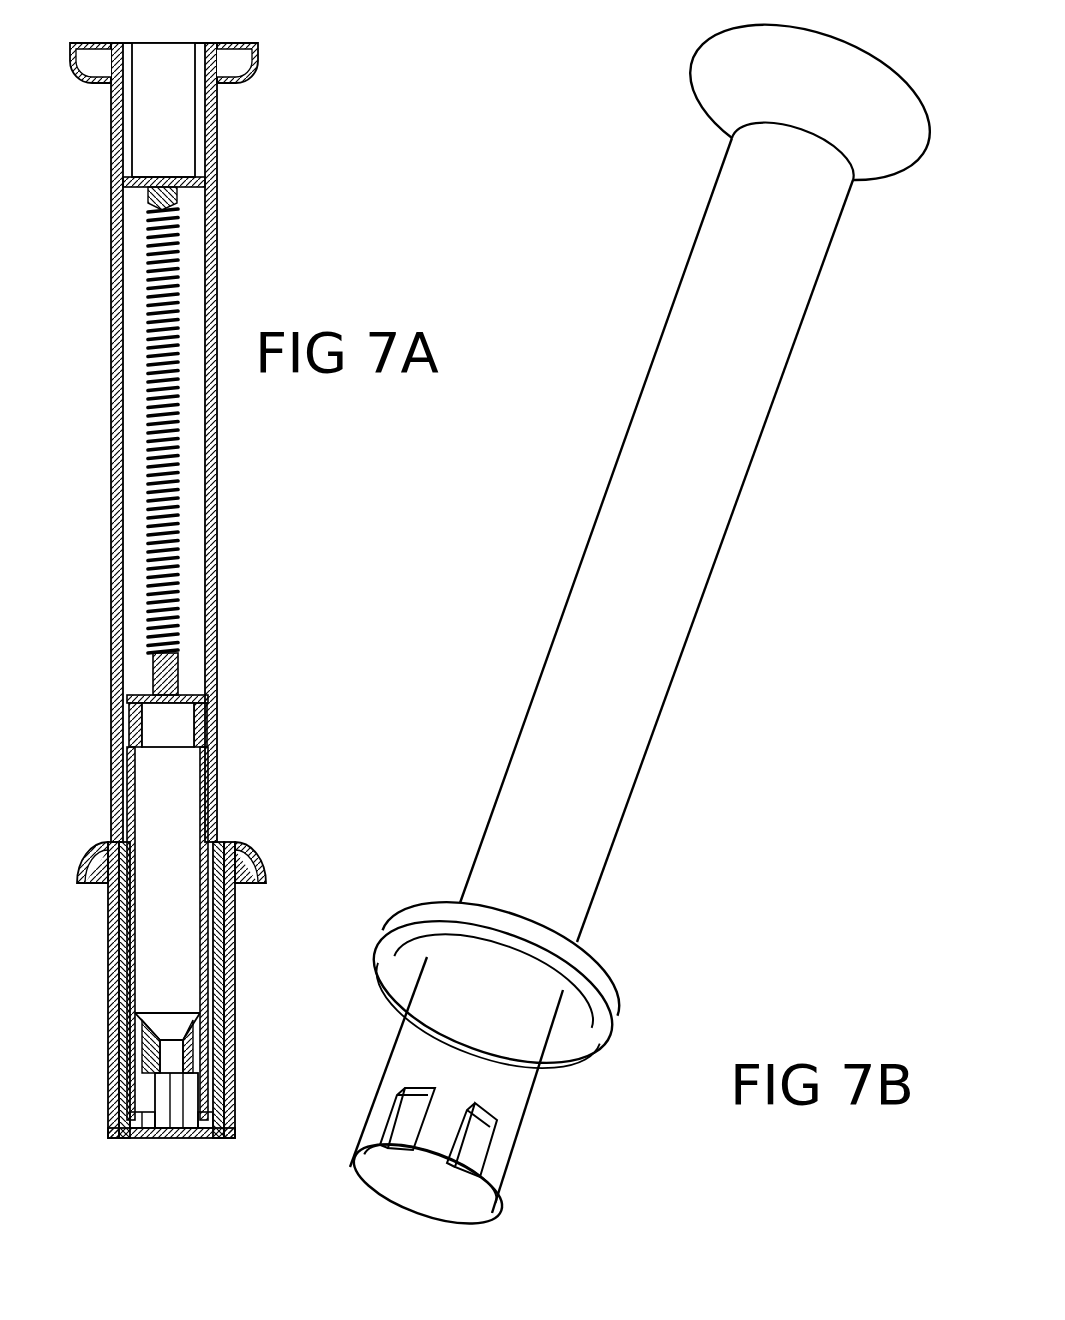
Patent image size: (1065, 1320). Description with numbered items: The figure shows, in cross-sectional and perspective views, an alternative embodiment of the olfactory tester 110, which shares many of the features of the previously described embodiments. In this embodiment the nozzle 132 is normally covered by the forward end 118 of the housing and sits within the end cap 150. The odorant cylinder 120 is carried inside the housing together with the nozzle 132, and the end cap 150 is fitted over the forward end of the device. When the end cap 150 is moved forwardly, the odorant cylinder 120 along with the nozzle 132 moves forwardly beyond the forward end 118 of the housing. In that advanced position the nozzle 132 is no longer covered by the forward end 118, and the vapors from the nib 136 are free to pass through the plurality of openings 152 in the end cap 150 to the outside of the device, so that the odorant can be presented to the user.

In FIG. 7A, the olfactory tester 110 is at (221, 590).
In FIG. 7B, the olfactory tester 110 is at (792, 735).
In FIG. 7A, the forward end of the housing 118 is at (108, 1040).
In FIG. 7A, the odorant cylinder 120 is at (218, 777).
In FIG. 7A, the nozzle 132 is at (110, 1108).
In FIG. 7A, the end cap 150 is at (235, 1105).
In FIG. 7B, the end cap 150 is at (527, 1063).
In FIG. 7B, the nib 136 is at (385, 1132).
In FIG. 7B, the openings 152 is at (517, 1150).